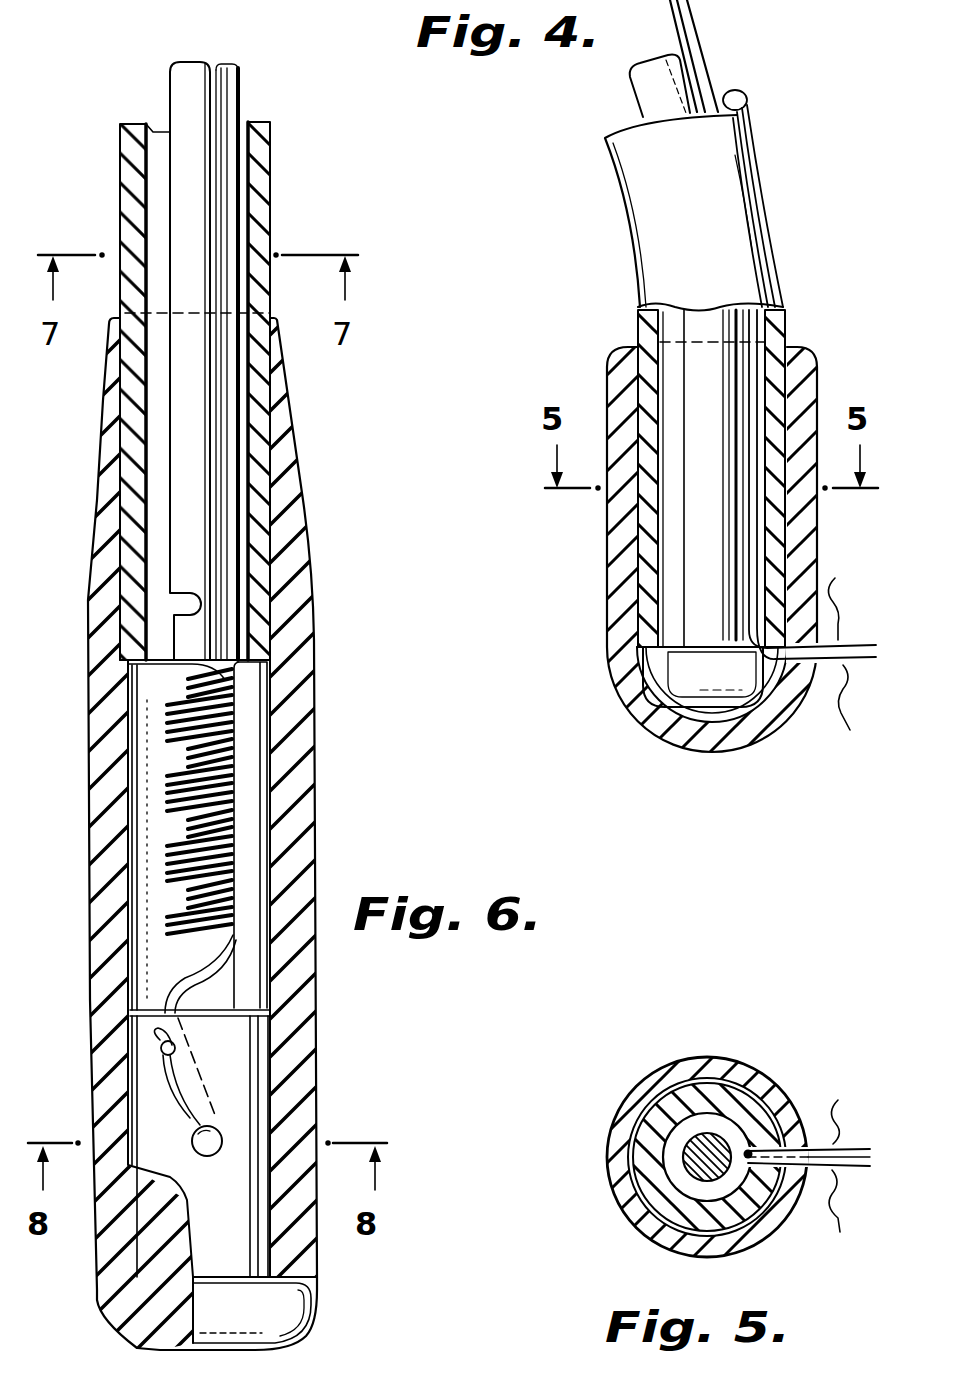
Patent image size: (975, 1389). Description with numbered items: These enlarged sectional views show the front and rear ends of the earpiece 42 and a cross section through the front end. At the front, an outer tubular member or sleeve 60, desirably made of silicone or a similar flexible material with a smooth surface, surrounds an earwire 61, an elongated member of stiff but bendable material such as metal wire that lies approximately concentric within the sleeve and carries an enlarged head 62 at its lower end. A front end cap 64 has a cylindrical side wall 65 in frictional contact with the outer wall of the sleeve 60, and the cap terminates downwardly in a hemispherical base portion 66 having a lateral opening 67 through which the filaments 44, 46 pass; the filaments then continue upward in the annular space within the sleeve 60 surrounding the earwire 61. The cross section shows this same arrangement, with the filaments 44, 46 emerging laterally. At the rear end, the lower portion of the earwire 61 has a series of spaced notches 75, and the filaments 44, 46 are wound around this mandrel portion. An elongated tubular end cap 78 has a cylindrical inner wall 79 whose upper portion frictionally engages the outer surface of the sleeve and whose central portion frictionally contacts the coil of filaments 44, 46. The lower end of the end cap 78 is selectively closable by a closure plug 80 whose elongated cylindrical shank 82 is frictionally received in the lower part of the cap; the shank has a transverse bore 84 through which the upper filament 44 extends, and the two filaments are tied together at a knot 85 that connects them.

In FIG. 6, the earpiece 42 is at (290, 188).
In FIG. 5, the earpiece 42 is at (680, 1068).
In FIG. 6, the filament 44 is at (180, 1117).
In FIG. 4, the filament 44 is at (812, 486).
In FIG. 5, the filament 44 is at (806, 1117).
In FIG. 4, the filament 46 is at (849, 716).
In FIG. 5, the filament 46 is at (831, 1220).
In FIG. 6, the sleeve 60 is at (128, 170).
In FIG. 4, the sleeve 60 is at (772, 328).
In FIG. 6, the earwire 61 is at (190, 92).
In FIG. 4, the earwire 61 is at (650, 92).
In FIG. 5, the earwire 61 is at (688, 1160).
In FIG. 4, the enlarged head 62 is at (688, 665).
In FIG. 4, the front end cap 64 is at (596, 342).
In FIG. 5, the front end cap 64 is at (767, 1045).
In FIG. 4, the cylindrical side wall 65 is at (648, 570).
In FIG. 4, the hemispherical base portion 66 is at (678, 735).
In FIG. 4, the lateral opening 67 is at (798, 725).
In FIG. 6, the notches 75 is at (167, 680).
In FIG. 6, the end cap 78 is at (340, 777).
In FIG. 6, the cylindrical inner wall 79 is at (148, 845).
In FIG. 6, the closure plug 80 is at (322, 1330).
In FIG. 6, the cylindrical shank 82 is at (235, 1065).
In FIG. 6, the transverse bore 84 is at (208, 1162).
In FIG. 6, the knot 85 is at (133, 1037).